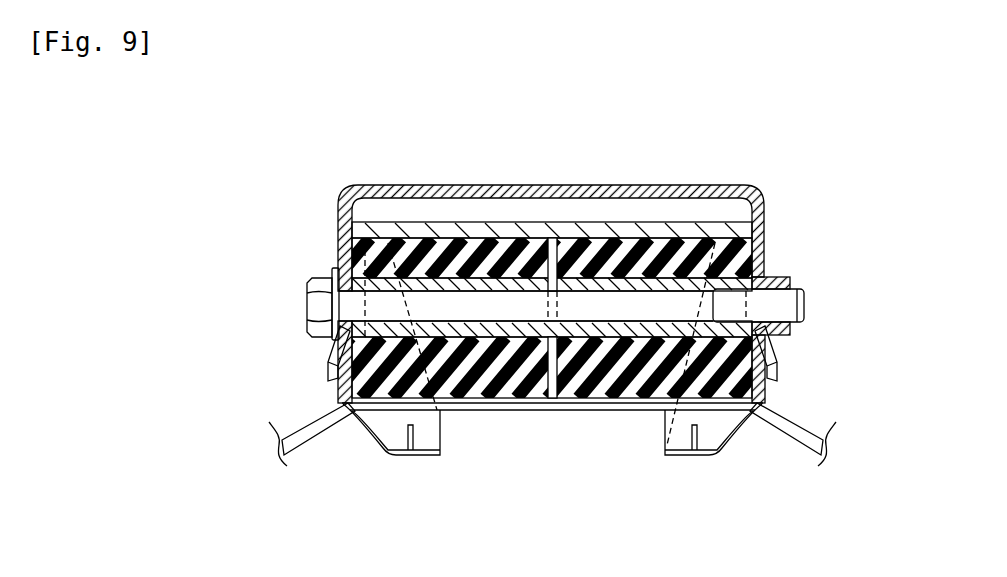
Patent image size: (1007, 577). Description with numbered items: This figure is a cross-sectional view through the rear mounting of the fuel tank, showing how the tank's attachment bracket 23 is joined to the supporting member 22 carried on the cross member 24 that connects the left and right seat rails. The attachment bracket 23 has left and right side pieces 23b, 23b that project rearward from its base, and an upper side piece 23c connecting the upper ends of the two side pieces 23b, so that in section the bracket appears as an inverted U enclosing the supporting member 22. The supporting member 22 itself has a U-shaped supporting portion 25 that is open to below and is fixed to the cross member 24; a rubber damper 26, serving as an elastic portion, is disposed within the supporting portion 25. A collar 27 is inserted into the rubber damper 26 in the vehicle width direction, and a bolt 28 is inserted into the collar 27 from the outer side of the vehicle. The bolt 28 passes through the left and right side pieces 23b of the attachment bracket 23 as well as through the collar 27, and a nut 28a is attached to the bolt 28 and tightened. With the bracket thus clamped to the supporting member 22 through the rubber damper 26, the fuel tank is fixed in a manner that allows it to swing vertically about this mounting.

The supporting member 22 is at (540, 194).
The attachment bracket 23 is at (560, 276).
The side pieces 23b is at (336, 257).
The upper side piece 23c is at (554, 187).
The cross member 24 is at (797, 422).
The supporting portion 25 is at (683, 221).
The rubber damper 26 is at (622, 370).
The collar 27 is at (525, 378).
The bolt 28 is at (307, 304).
The nut 28a is at (789, 336).